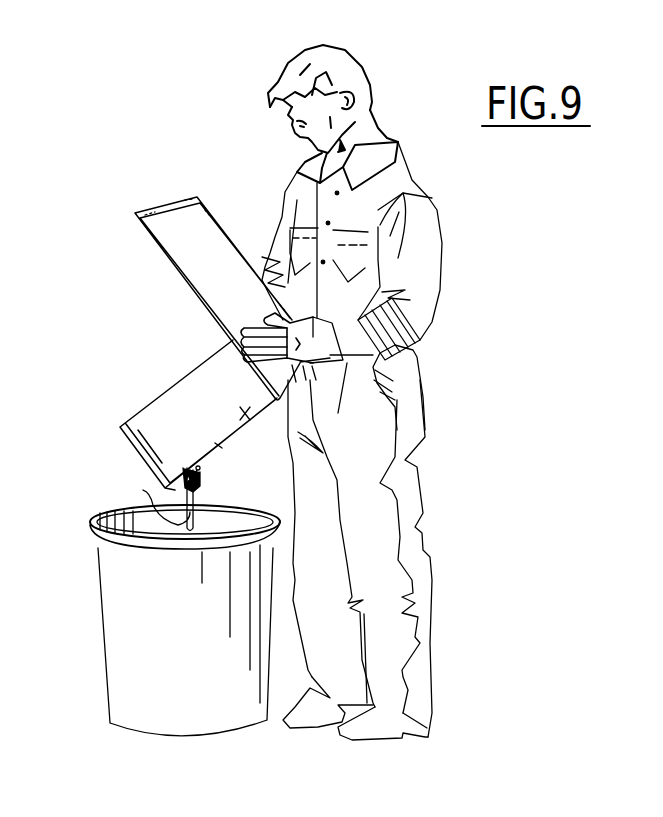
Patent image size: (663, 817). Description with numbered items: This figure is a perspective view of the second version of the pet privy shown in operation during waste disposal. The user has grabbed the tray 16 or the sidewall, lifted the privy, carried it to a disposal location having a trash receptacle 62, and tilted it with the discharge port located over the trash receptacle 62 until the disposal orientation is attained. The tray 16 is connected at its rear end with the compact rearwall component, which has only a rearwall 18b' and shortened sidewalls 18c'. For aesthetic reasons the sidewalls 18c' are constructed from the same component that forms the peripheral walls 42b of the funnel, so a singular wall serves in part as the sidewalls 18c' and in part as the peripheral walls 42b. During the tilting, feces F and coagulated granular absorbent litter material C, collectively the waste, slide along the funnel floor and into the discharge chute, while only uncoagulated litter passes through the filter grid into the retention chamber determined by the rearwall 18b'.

The tray 16 is at (217, 218).
The peripheral walls 42b is at (163, 402).
The coagulated granular absorbent litter material C is at (188, 477).
The sidewalls 18c' is at (261, 432).
The rearwall 18b' is at (245, 472).
The feces F is at (150, 492).
The trash receptacle 62 is at (105, 650).